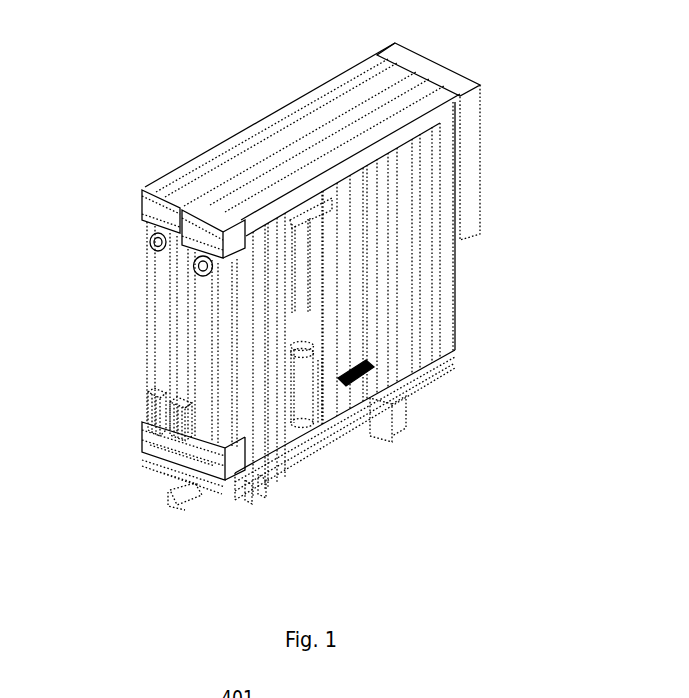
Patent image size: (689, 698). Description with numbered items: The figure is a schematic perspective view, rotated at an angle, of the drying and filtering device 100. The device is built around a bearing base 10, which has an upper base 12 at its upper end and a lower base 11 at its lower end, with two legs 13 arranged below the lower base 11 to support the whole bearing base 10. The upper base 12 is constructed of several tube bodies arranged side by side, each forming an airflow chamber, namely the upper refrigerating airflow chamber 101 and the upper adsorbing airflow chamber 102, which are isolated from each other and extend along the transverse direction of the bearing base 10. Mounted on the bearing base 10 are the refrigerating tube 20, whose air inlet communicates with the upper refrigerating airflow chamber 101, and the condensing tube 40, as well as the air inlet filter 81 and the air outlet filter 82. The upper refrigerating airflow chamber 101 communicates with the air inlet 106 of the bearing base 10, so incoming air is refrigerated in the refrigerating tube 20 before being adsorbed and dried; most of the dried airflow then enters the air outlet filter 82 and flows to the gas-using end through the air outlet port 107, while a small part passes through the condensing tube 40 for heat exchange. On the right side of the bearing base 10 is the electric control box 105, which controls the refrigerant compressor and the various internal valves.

The drying and filtering device 100 is at (116, 132).
The upper refrigerating airflow chamber 101 is at (412, 92).
The upper adsorbing airflow chamber 102 is at (231, 152).
The electric control box 105 is at (458, 97).
The upper base 12 is at (143, 192).
The air outlet port 107 is at (153, 238).
The air inlet 106 is at (196, 265).
The air outlet filter 82 is at (165, 316).
The air inlet filter 81 is at (205, 356).
The refrigerating tube 20 is at (455, 268).
The lower base 11 is at (301, 445).
The legs 13 is at (407, 425).
The condensing tube 40 is at (248, 505).
The bearing base 10 is at (228, 508).